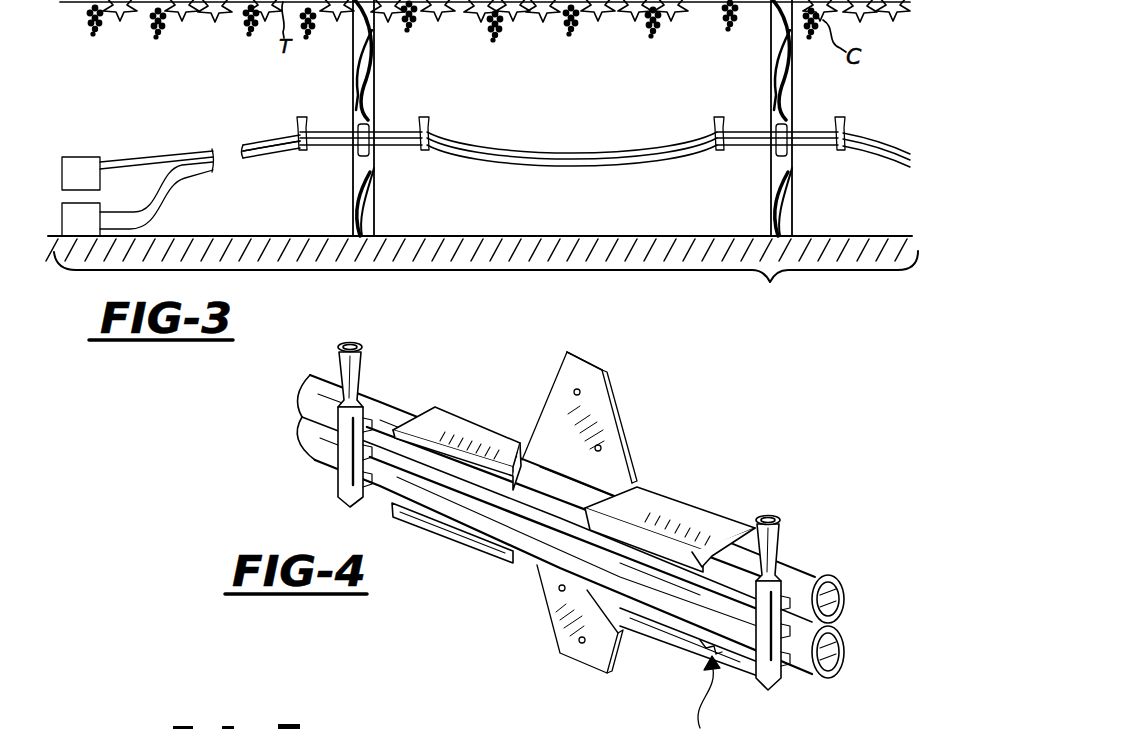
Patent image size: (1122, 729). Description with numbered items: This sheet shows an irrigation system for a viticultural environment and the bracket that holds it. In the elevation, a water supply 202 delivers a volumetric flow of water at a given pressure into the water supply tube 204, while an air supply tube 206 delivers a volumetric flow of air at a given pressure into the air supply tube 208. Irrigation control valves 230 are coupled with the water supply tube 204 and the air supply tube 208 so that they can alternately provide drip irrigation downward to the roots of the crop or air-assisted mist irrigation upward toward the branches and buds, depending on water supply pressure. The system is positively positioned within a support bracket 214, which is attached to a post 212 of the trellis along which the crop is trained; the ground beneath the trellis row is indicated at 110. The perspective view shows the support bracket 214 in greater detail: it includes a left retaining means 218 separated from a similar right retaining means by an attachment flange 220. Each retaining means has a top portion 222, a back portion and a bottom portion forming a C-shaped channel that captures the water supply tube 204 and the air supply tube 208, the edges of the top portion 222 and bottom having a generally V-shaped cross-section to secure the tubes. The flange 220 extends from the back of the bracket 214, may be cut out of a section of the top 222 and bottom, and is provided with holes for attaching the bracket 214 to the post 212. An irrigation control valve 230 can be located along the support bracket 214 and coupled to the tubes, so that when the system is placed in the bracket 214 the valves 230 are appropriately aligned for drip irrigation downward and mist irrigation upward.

In FIG. 3, the ground / vineyard row 110 is at (486, 284).
In FIG. 3, the water supply 202 is at (140, 222).
In FIG. 3, the water supply tube 204 is at (276, 153).
In FIG. 3, the air supply tube 206 is at (86, 157).
In FIG. 3, the air supply tube 208 is at (256, 147).
In FIG. 4, the air supply tube 208 is at (846, 726).
In FIG. 3, the post 212 is at (358, 68).
In FIG. 3, the support bracket 214 is at (384, 158).
In FIG. 4, the support bracket 214 is at (634, 402).
In FIG. 4, the left retaining means 218 is at (454, 556).
In FIG. 4, the attachment flange 220 is at (614, 444).
In FIG. 4, the top portion 222 is at (450, 428).
In FIG. 3, the irrigation control valve 230 is at (571, 133).
In FIG. 4, the irrigation control valve 230 is at (380, 366).